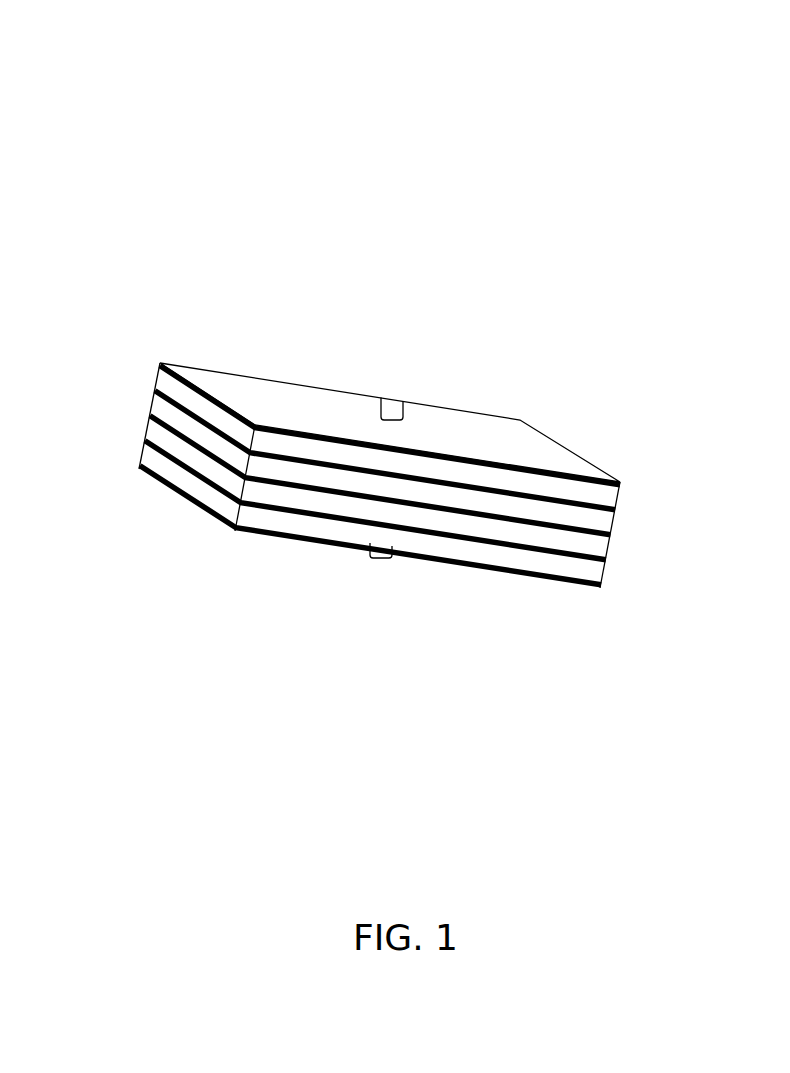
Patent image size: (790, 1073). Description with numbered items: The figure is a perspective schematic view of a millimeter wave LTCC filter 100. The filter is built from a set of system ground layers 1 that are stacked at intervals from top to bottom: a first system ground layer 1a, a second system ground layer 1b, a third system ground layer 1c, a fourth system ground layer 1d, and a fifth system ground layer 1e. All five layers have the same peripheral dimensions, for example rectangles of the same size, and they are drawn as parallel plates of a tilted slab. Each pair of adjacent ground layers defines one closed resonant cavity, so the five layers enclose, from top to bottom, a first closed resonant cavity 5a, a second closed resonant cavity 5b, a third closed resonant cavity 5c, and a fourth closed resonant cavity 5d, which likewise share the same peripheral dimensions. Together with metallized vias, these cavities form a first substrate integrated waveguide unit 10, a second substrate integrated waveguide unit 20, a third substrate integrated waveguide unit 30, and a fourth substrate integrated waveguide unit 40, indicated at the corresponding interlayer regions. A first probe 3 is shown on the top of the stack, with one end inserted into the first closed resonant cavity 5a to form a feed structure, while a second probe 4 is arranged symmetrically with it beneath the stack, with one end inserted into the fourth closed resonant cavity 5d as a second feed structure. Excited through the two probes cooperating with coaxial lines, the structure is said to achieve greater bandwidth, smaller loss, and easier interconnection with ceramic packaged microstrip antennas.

The millimeter wave LTCC filter 100 is at (342, 58).
The system ground layers 1 is at (60, 358).
The first system ground layer 1a is at (158, 365).
The second system ground layer 1b is at (156, 389).
The third system ground layer 1c is at (151, 414).
The fourth system ground layer 1d is at (146, 439).
The fifth system ground layer 1e is at (153, 471).
The first probe 3 is at (393, 398).
The second probe 4 is at (382, 557).
The first closed resonant cavity 5a is at (583, 491).
The second closed resonant cavity 5b is at (583, 520).
The third closed resonant cavity 5c is at (583, 543).
The fourth closed resonant cavity 5d is at (583, 572).
The first substrate integrated waveguide unit 10 is at (247, 432).
The second substrate integrated waveguide unit 20 is at (285, 465).
The third substrate integrated waveguide unit 30 is at (332, 493).
The fourth substrate integrated waveguide unit 40 is at (358, 523).